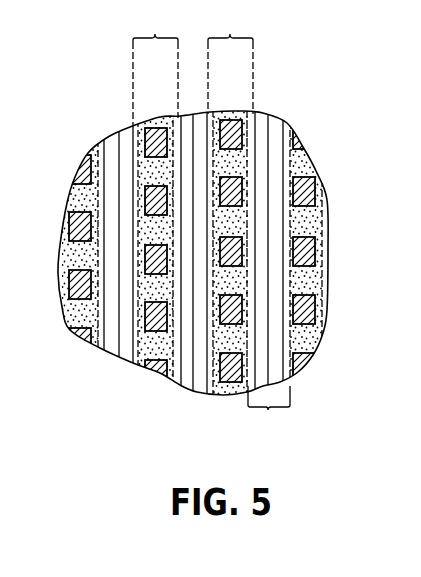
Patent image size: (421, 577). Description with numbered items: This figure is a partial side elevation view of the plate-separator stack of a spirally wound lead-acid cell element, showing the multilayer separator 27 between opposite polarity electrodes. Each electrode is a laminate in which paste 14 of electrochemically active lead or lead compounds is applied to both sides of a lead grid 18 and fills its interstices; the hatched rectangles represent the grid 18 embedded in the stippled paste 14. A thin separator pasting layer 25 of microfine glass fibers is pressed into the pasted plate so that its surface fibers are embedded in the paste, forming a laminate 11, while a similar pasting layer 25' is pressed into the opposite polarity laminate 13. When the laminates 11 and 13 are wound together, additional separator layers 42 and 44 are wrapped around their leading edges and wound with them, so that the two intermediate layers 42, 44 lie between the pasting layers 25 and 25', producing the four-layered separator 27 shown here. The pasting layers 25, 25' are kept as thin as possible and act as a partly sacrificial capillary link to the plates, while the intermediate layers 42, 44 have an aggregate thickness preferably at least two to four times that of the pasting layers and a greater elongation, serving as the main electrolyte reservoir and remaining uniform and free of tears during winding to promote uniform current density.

The laminate 11 is at (155, 67).
The opposite polarity laminate 13 is at (230, 62).
The paste 14 is at (152, 173).
The grid 18 is at (157, 377).
The separator pasting layer 25 is at (156, 244).
The separator pasting layer 25' is at (277, 239).
The separator 27 is at (269, 411).
The additional separator layer 42 is at (187, 380).
The additional separator layer 44 is at (200, 383).